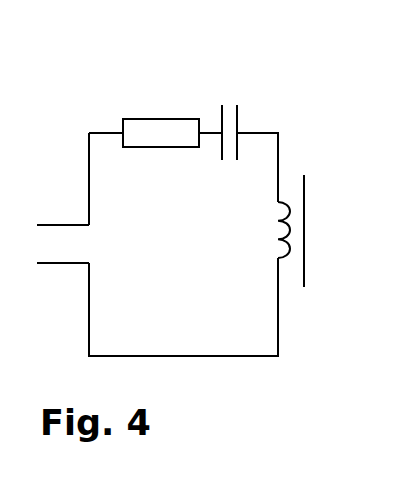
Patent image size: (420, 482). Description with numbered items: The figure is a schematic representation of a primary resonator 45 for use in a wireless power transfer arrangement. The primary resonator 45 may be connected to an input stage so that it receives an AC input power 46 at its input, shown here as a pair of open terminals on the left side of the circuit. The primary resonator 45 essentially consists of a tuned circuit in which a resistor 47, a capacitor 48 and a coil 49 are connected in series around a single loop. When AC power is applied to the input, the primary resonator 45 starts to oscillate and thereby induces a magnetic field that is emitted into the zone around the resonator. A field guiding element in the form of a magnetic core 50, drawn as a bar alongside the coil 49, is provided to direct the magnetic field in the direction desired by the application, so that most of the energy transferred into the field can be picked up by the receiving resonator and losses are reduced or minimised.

The primary resonator 45 is at (78, 112).
The AC input power 46 is at (57, 244).
The resistor 47 is at (170, 118).
The capacitor 48 is at (226, 103).
The coil 49 is at (268, 230).
The magnetic core 50 is at (305, 167).